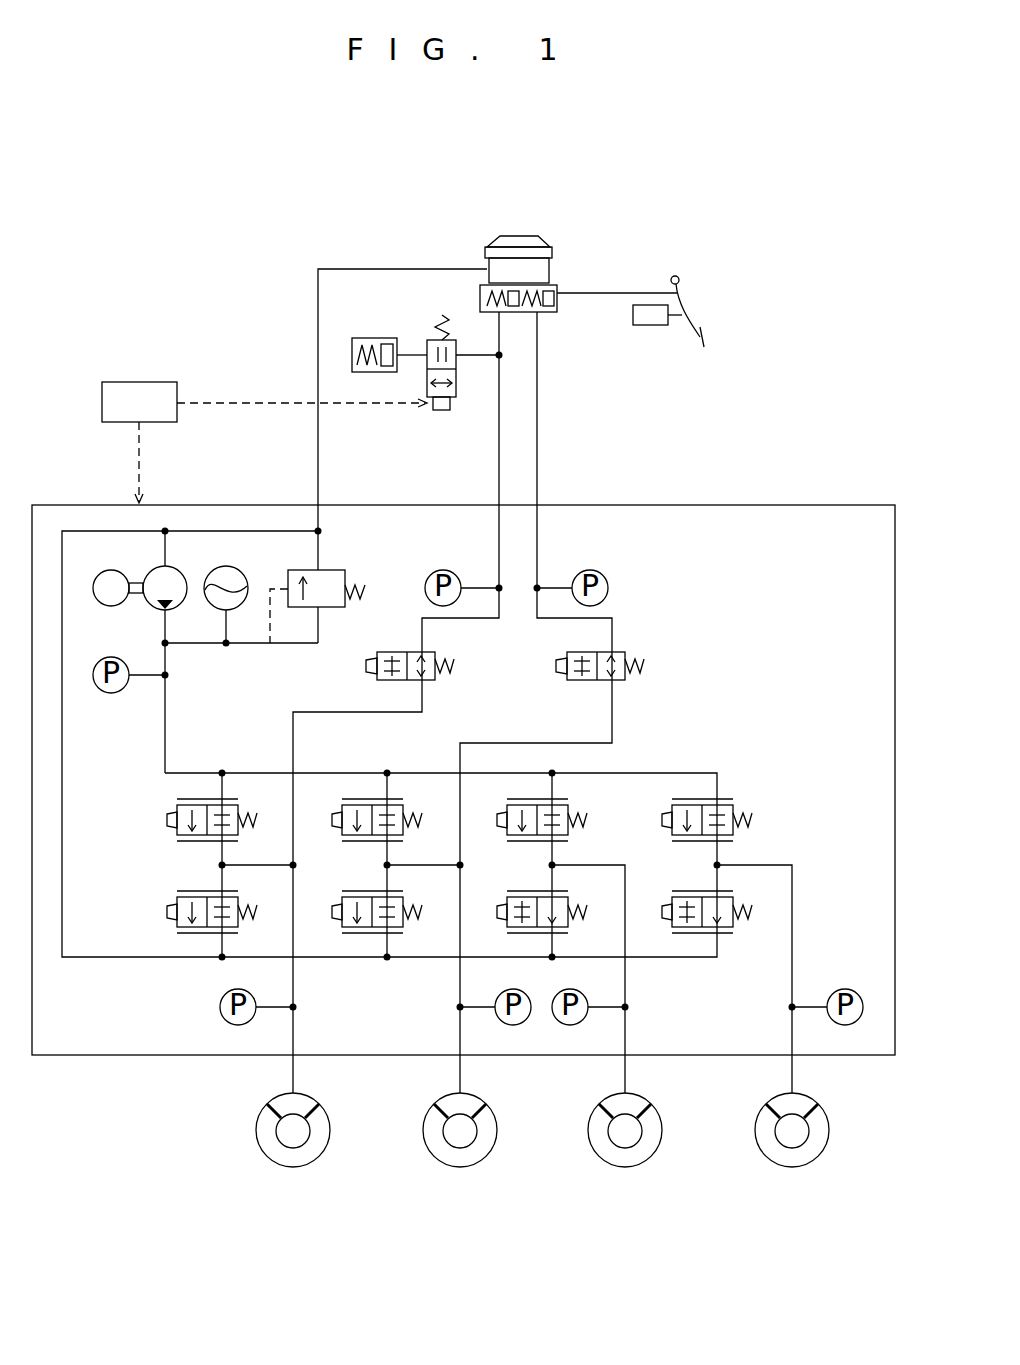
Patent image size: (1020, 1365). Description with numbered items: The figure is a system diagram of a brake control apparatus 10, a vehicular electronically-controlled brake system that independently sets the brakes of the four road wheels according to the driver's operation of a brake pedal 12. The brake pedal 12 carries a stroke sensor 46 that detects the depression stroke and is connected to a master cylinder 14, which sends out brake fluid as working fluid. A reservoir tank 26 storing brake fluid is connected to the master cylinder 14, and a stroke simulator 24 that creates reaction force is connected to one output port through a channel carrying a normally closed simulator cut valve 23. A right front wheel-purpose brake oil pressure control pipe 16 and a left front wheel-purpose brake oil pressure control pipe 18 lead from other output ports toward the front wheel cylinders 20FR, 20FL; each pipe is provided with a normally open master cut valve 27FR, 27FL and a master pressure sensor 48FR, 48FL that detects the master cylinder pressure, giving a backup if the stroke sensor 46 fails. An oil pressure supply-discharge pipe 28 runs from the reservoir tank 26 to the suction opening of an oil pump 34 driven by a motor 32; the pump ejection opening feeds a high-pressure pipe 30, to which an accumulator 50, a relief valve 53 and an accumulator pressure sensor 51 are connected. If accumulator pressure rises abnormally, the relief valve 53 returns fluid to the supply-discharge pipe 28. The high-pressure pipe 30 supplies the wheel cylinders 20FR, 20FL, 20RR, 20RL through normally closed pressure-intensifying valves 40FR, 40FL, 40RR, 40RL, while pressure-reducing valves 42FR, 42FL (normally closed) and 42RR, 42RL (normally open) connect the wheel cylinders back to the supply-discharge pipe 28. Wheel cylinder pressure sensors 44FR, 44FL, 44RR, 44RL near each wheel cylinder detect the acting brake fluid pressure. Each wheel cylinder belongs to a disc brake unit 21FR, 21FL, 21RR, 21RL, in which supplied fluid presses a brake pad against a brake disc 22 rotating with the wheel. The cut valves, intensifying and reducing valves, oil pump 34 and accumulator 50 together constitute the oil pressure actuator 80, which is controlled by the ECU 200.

The brake control apparatus 10 is at (235, 270).
The brake pedal 12 is at (704, 340).
The master cylinder 14 is at (557, 313).
The right front wheel-purpose brake oil pressure control pipe 16 is at (480, 622).
The left front wheel-purpose brake oil pressure control pipe 18 is at (540, 622).
The right front wheel-purpose wheel cylinder 20FR is at (270, 1102).
The left front wheel-purpose wheel cylinder 20FL is at (440, 1102).
The left rear wheel-purpose wheel cylinder 20RL is at (606, 1102).
The right rear wheel-purpose wheel cylinder 20RR is at (774, 1102).
The disc brake unit 21FR is at (250, 1157).
The disc brake unit 21FL is at (417, 1157).
The disc brake unit 21RL is at (583, 1157).
The disc brake unit 21RR is at (748, 1157).
The brake disc 22 is at (293, 1168).
The simulator cut valve 23 is at (450, 402).
The stroke simulator 24 is at (373, 338).
The reservoir tank 26 is at (519, 236).
The right master cut valve 27FR is at (366, 666).
The left master cut valve 27FL is at (645, 667).
The oil pressure supply-discharge pipe 28 is at (418, 269).
The high-pressure pipe 30 is at (167, 663).
The motor 32 is at (127, 573).
The oil pump 34 is at (185, 573).
The pressure-intensifying valve 40FR is at (167, 818).
The pressure-intensifying valve 40FL is at (378, 800).
The pressure-intensifying valve 40RL is at (568, 812).
The pressure-intensifying valve 40RR is at (733, 800).
The pressure-reducing valve 42FR is at (167, 910).
The pressure-reducing valve 42FL is at (375, 937).
The pressure-reducing valve 42RL is at (522, 896).
The pressure-reducing valve 42RR is at (723, 935).
The wheel cylinder pressure sensor 44FR is at (220, 1007).
The wheel cylinder pressure sensor 44FL is at (507, 1025).
The wheel cylinder pressure sensor 44RL is at (576, 1025).
The wheel cylinder pressure sensor 44RR is at (845, 988).
The stroke sensor 46 is at (650, 325).
The right master pressure sensor 48FR is at (443, 569).
The left master pressure sensor 48FL is at (590, 569).
The accumulator 50 is at (245, 573).
The accumulator pressure sensor 51 is at (113, 694).
The relief valve 53 is at (332, 570).
The oil pressure actuator 80 is at (794, 505).
The electronic control unit (ECU) 200 is at (139, 381).